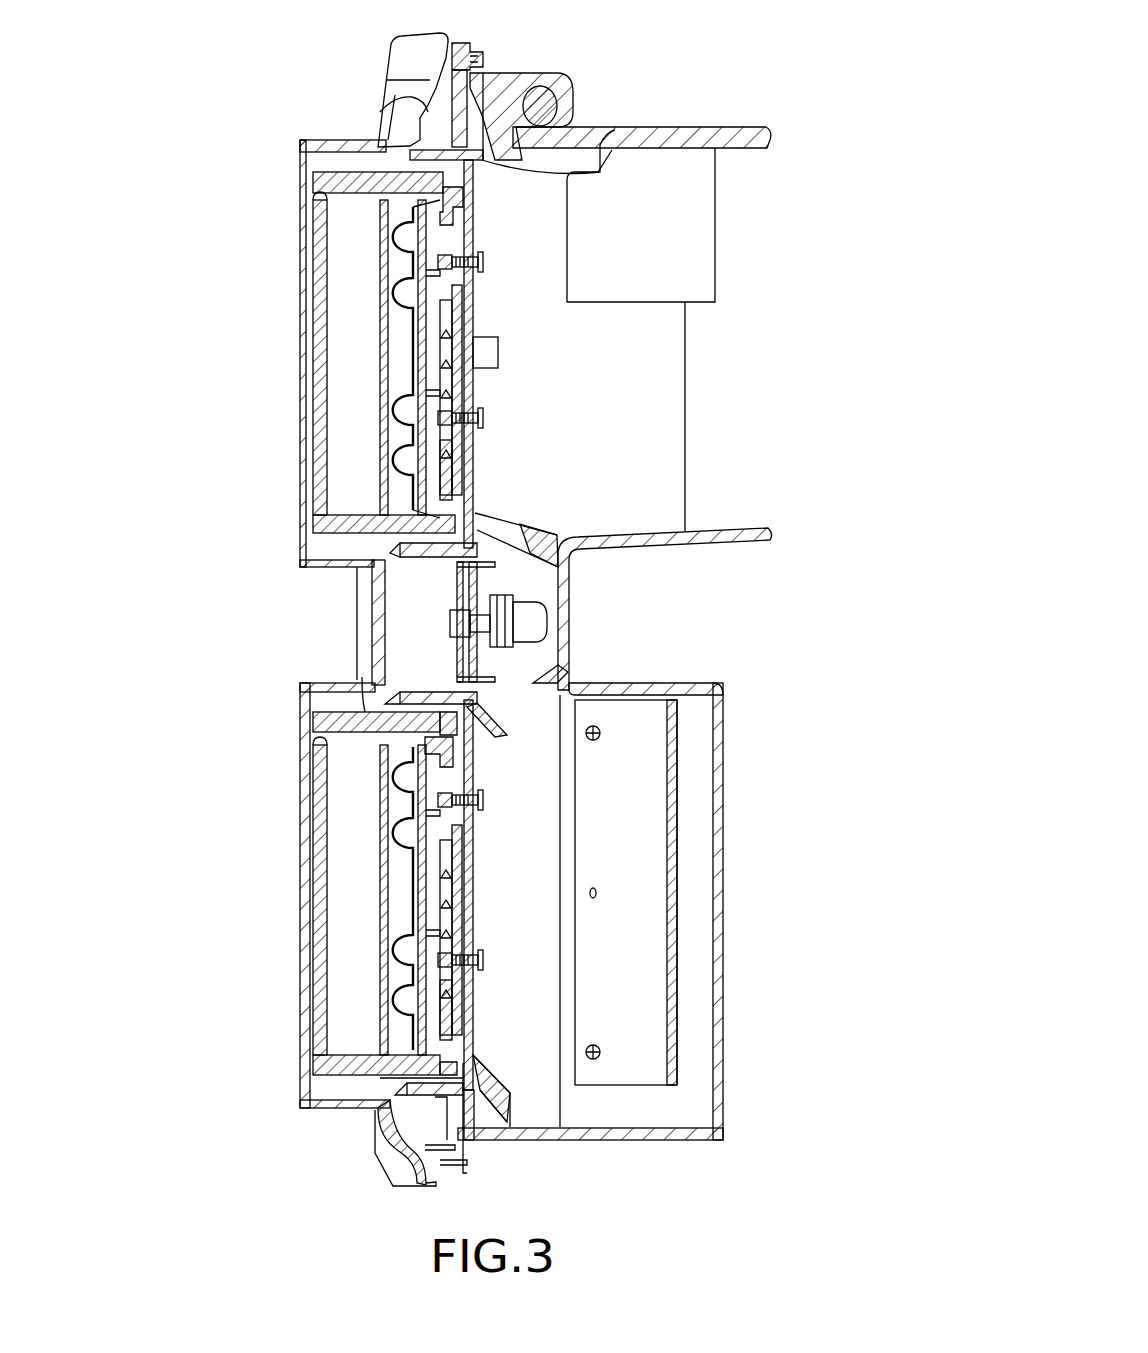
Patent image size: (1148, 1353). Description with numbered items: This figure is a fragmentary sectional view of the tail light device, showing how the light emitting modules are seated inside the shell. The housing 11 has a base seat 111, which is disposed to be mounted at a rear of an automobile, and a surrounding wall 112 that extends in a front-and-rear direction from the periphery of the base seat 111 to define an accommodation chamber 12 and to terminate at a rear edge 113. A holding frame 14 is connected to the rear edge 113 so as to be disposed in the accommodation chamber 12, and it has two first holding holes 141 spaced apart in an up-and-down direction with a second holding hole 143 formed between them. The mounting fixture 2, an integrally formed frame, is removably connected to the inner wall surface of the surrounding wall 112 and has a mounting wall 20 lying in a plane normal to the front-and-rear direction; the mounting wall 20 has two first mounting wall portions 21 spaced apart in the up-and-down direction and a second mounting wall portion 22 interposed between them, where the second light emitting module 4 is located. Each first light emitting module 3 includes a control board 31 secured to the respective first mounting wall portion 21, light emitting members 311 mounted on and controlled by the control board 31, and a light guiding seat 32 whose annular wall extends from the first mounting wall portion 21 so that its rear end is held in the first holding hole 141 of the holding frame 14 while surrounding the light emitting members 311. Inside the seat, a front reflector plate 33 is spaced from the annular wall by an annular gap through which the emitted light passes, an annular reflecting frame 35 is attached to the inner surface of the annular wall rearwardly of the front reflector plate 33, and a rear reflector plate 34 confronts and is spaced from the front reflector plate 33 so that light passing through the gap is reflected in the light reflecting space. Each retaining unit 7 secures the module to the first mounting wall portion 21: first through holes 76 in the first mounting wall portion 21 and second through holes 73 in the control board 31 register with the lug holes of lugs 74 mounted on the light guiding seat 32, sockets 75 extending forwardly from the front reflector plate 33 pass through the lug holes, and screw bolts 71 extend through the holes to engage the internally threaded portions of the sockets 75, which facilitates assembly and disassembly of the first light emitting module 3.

The mounting fixture 2 is at (527, 514).
The first light emitting module 3 is at (372, 353).
The second light emitting module 4 is at (533, 627).
The retaining unit 7 is at (503, 264).
The housing 11 is at (720, 1037).
The accommodation chamber 12 is at (543, 1067).
The holding frame 14 is at (323, 1103).
The mounting wall 20 is at (477, 868).
The first mounting wall portion 21 is at (470, 333).
The second mounting wall portion 22 is at (560, 610).
The control board 31 is at (405, 310).
The light guiding seat 32 is at (455, 495).
The front reflector plate 33 is at (455, 395).
The rear reflector plate 34 is at (460, 398).
The annular reflecting frame 35 is at (445, 200).
The screw bolt 71 is at (485, 260).
The second through hole 73 is at (538, 262).
The lug 74 is at (440, 440).
The socket 75 is at (422, 295).
The first through hole 76 is at (458, 235).
The base seat 111 is at (727, 747).
The surrounding wall 112 is at (687, 1133).
The rear edge 113 is at (467, 1167).
The first holding hole 141 is at (343, 453).
The second holding hole 143 is at (465, 635).
The light emitting member 311 is at (387, 172).